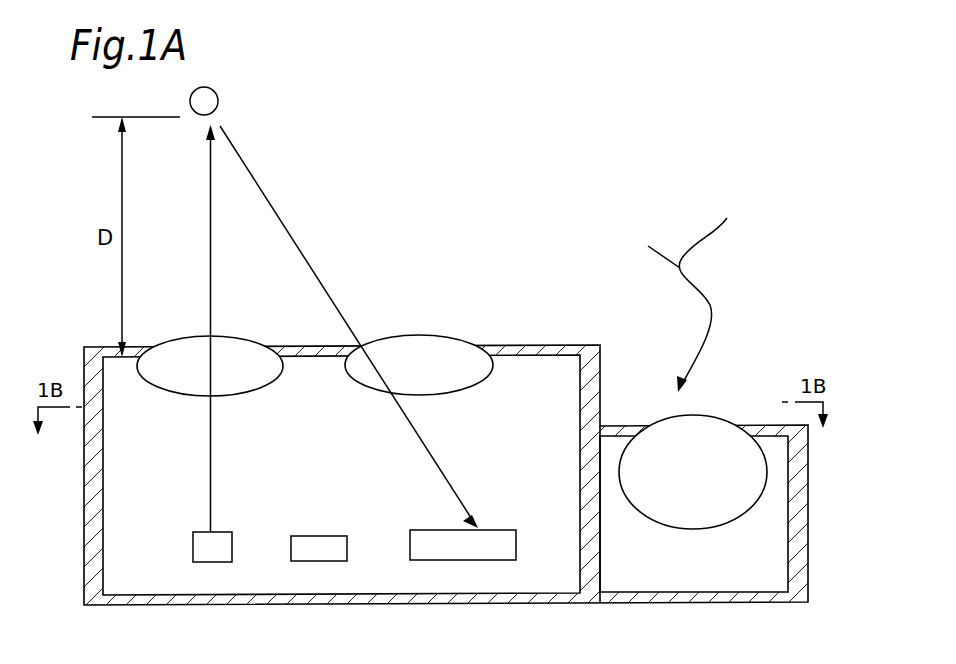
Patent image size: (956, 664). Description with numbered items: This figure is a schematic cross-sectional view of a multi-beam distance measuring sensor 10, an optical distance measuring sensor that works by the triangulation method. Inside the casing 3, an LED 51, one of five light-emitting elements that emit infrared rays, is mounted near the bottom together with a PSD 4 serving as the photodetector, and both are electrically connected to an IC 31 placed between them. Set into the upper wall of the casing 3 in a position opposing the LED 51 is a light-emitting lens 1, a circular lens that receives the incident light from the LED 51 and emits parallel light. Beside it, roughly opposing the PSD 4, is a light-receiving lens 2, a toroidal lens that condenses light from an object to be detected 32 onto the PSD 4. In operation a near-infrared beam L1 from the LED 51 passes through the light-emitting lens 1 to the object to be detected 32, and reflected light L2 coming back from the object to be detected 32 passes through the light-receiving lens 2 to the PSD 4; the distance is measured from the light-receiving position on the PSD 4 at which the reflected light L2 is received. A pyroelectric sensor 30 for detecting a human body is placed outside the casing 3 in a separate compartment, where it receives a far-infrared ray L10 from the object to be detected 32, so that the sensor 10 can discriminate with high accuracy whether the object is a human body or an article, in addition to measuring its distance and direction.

The light-emitting lens 1 is at (235, 358).
The light-receiving lens 2 is at (450, 358).
The casing 3 is at (88, 460).
The PSD (position sensitive detector) 4 is at (430, 560).
The multi-beam distance measuring sensor 10 is at (478, 332).
The pyroelectric sensor 30 is at (732, 433).
The IC (integrated circuit) 31 is at (300, 561).
The object to be detected 32 is at (213, 102).
The LED (light emitting diode) 51 is at (210, 562).
The near-infrared beam L1 is at (209, 245).
The reflected light L2 is at (305, 253).
The far-infrared ray L10 is at (700, 292).